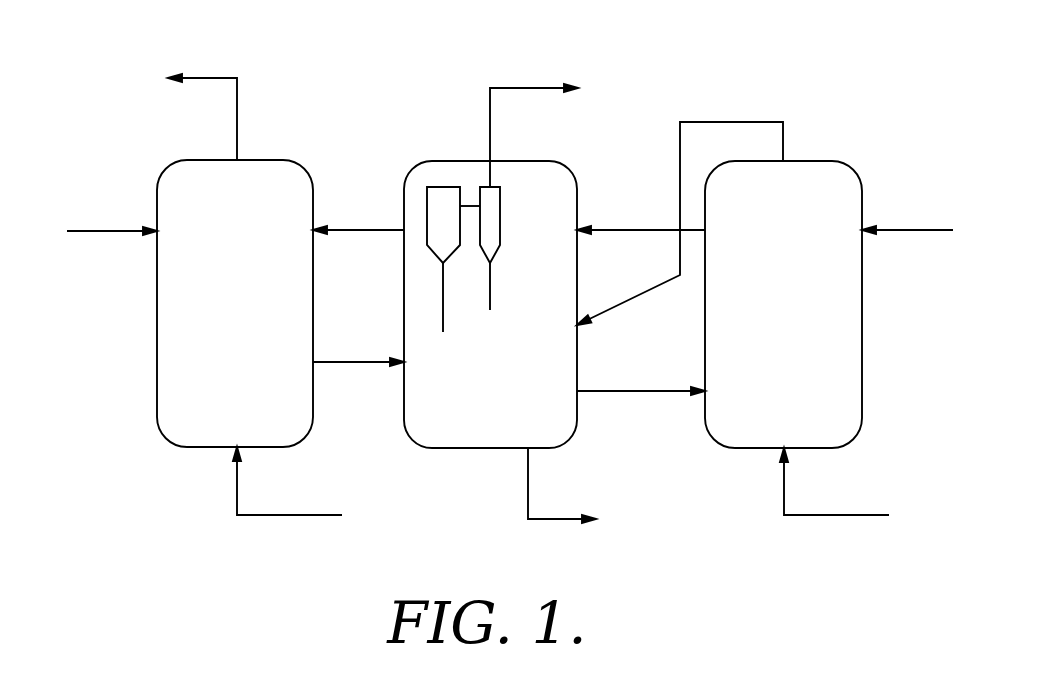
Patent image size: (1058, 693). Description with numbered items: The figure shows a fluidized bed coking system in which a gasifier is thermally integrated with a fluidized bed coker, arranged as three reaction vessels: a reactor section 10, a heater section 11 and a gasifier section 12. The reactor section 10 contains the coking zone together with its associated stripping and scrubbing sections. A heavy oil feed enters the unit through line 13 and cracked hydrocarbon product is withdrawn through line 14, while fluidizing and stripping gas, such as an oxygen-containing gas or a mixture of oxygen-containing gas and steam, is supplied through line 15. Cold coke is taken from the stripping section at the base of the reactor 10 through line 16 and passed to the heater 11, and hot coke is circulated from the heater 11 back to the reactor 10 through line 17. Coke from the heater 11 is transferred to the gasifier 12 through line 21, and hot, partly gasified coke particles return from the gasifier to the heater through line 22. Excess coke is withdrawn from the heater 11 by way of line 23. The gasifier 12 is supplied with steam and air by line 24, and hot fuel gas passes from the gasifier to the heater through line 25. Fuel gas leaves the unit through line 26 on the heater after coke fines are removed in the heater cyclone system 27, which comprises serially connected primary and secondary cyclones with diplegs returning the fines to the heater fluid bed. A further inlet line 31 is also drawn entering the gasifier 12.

The reactor section 10 is at (221, 308).
The heater section 11 is at (469, 395).
The gasifier section 12 is at (760, 325).
The line 13 is at (99, 266).
The line 14 is at (211, 77).
The line 15 is at (237, 497).
The line 16 is at (357, 364).
The line 17 is at (368, 229).
The line 21 is at (630, 393).
The line 22 is at (641, 228).
The line 23 is at (528, 488).
The line 24 is at (827, 517).
The line 25 is at (738, 121).
The line 26 is at (533, 87).
The heater cyclone system 27 is at (528, 202).
The regenerator feed line 31 is at (919, 229).